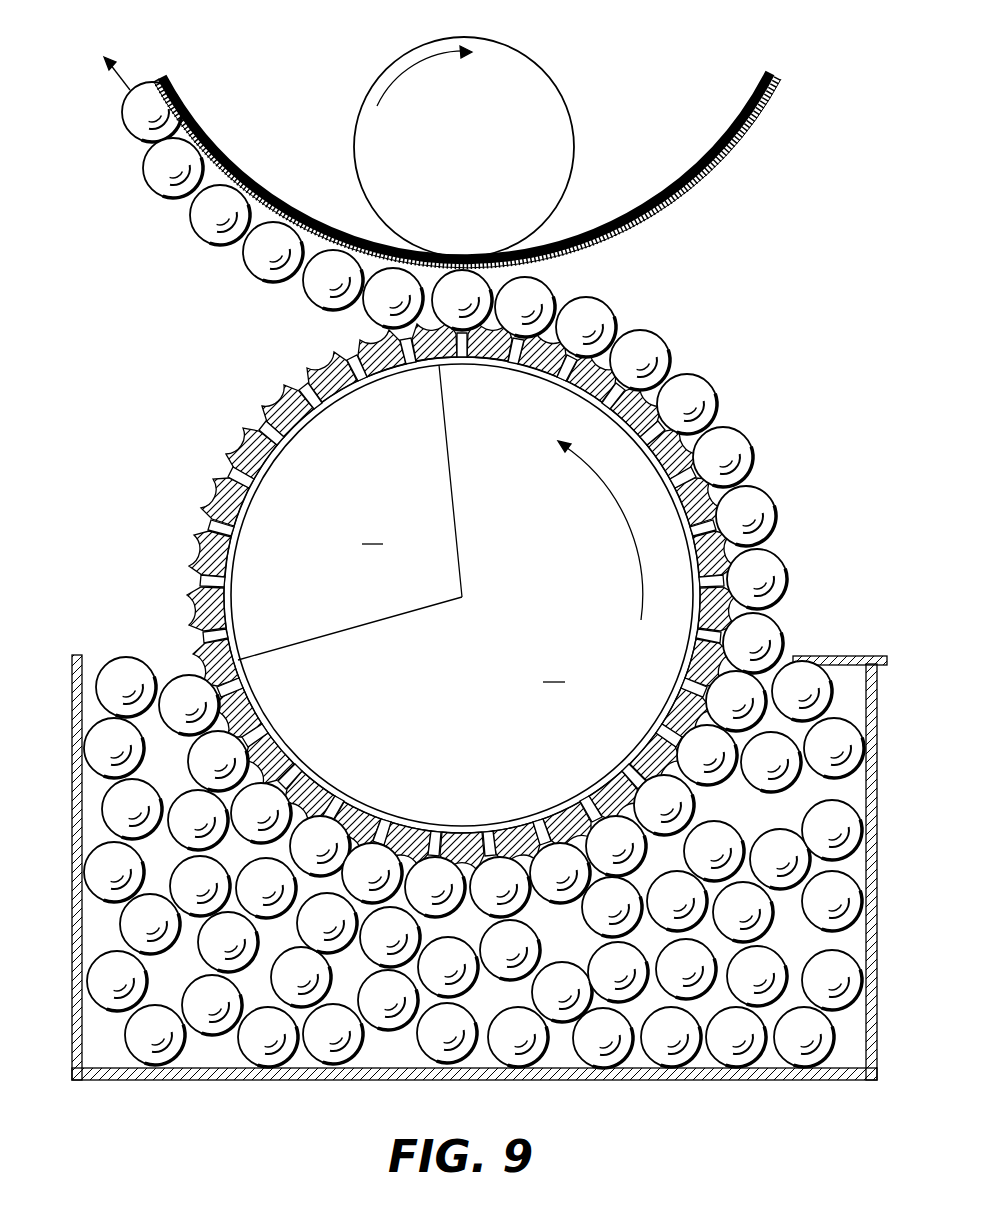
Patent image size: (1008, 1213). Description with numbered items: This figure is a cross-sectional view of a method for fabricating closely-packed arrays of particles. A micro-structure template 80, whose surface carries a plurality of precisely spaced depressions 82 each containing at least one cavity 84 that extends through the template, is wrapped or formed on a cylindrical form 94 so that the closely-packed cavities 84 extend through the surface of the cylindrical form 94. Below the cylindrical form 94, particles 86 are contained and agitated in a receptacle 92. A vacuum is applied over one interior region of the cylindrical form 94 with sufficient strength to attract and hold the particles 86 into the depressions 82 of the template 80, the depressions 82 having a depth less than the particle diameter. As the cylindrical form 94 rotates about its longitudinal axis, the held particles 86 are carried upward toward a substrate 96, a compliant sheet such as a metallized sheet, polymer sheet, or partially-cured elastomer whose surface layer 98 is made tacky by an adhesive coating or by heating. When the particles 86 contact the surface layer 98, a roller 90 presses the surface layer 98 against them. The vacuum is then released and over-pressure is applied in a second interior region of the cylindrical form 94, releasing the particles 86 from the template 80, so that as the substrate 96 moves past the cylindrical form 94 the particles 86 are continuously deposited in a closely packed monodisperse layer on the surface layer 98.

The micro-structure template 80 is at (431, 595).
The depressions 82 is at (197, 592).
The cavities 84 is at (226, 532).
The particles 86 is at (156, 146).
The roller 90 is at (515, 60).
The receptacle 92 is at (71, 676).
The cylindrical form 94 is at (343, 402).
The substrate 96 is at (713, 142).
The surface layer 98 is at (660, 211).